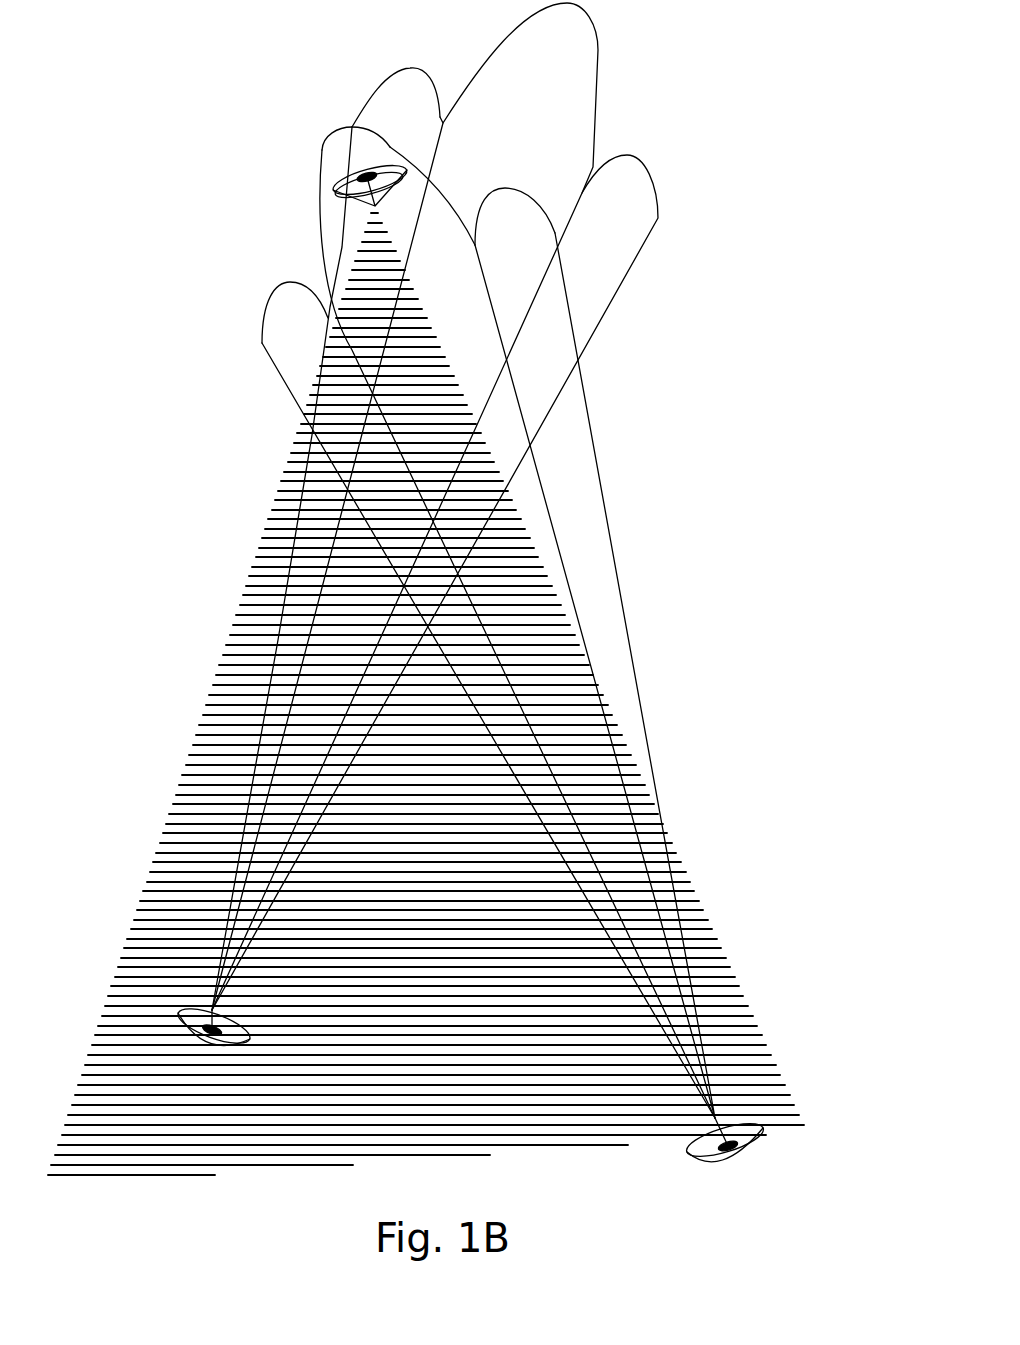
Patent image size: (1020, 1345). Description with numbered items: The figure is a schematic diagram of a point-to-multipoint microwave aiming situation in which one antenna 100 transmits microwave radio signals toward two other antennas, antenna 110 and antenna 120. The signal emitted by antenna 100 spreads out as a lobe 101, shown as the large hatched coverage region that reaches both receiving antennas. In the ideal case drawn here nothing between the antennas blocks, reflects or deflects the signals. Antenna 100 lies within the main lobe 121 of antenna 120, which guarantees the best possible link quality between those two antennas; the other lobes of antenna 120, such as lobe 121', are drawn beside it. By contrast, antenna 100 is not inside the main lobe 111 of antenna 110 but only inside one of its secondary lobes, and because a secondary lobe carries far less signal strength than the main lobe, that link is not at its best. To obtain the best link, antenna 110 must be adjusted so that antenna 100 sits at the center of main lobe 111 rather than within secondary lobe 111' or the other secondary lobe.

The antenna 100 is at (339, 186).
The lobe 101 is at (330, 1082).
The antenna 110 is at (183, 1005).
The main lobe 111 is at (477, 506).
The secondary lobe 111' is at (486, 560).
The antenna 120 is at (745, 1127).
The main lobe 121 is at (468, 584).
The beam of third antenna 121' is at (421, 699).